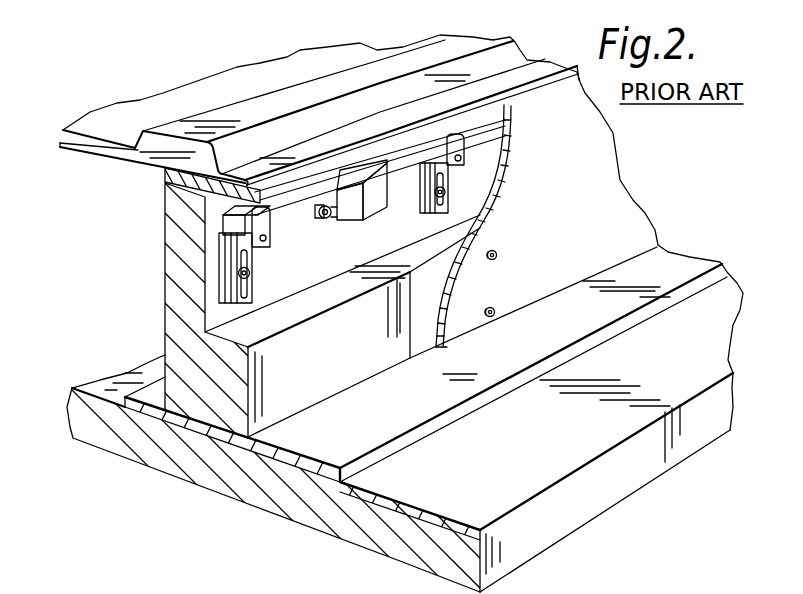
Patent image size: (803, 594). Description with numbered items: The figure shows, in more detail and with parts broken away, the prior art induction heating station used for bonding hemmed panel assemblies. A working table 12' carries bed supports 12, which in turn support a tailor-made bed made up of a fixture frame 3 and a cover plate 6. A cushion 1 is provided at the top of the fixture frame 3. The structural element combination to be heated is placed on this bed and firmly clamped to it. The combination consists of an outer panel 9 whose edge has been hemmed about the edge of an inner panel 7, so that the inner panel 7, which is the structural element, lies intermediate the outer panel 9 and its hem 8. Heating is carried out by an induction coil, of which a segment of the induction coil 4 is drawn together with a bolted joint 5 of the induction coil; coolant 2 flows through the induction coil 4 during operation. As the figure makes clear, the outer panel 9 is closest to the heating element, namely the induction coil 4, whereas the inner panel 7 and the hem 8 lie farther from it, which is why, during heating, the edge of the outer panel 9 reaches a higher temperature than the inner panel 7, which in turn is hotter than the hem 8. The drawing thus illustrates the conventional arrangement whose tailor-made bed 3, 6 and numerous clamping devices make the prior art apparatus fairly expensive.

The cushion 1 is at (298, 190).
The coolant 2 is at (227, 220).
The fixture frame 3 is at (228, 406).
The induction coil 4 is at (283, 222).
The bolted joint of the induction coil 5 is at (370, 190).
The cover plate 6 is at (573, 194).
The inner panel 7 is at (207, 120).
The hem 8 is at (290, 150).
The outer panel 9 is at (107, 160).
The bed supports 12 is at (413, 404).
The working table 12' is at (588, 482).